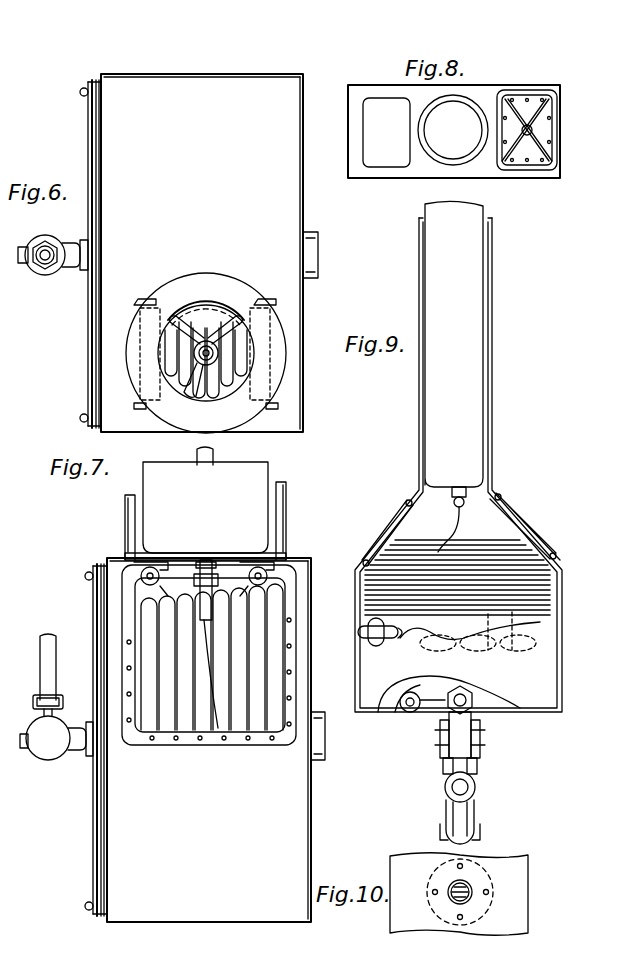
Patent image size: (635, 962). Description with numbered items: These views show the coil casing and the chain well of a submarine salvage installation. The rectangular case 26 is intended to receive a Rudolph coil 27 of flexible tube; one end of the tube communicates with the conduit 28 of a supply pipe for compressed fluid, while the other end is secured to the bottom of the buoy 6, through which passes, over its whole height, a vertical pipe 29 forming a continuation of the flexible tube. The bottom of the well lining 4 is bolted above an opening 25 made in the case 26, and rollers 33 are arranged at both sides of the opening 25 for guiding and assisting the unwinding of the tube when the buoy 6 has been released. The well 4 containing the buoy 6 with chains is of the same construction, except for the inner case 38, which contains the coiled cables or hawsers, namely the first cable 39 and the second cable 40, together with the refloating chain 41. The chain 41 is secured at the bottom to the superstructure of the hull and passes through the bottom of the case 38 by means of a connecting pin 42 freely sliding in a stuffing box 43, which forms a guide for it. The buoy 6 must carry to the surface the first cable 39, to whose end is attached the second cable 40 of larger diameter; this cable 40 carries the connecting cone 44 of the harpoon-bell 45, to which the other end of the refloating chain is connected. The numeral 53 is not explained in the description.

In FIG. 7, the well lining 4 is at (286, 512).
In FIG. 8, the well lining 4 is at (525, 88).
In FIG. 9, the well lining 4 is at (490, 340).
In FIG. 7, the buoy 6 is at (205, 507).
In FIG. 8, the buoy 6 is at (466, 148).
In FIG. 9, the buoy 6 is at (472, 210).
In FIG. 6, the opening 25 is at (163, 345).
In FIG. 6, the rectangular case 26 is at (199, 253).
In FIG. 7, the rectangular case 26 is at (205, 918).
In FIG. 6, the Rudolph coil 27 is at (222, 357).
In FIG. 7, the Rudolph coil 27 is at (233, 716).
In FIG. 6, the conduit 28 is at (45, 282).
In FIG. 7, the conduit 28 is at (50, 690).
In FIG. 7, the vertical pipe 29 is at (213, 455).
In FIG. 6, the rollers 33 is at (245, 320).
In FIG. 9, the inner case 38 is at (553, 592).
In FIG. 10, the inner case 38 is at (459, 894).
In FIG. 9, the first cable 39 is at (452, 518).
In FIG. 9, the second cable 40 is at (365, 590).
In FIG. 9, the refloating chain 41 is at (358, 633).
In FIG. 9, the connecting pin 42 is at (471, 730).
In FIG. 10, the connecting pin 42 is at (488, 892).
In FIG. 10, the stuffing box 43 is at (468, 882).
In FIG. 9, the connecting cone 44 is at (500, 636).
In FIG. 9, the harpoon-bell 45 is at (440, 742).
In FIG. 7, the roller 53 is at (205, 588).